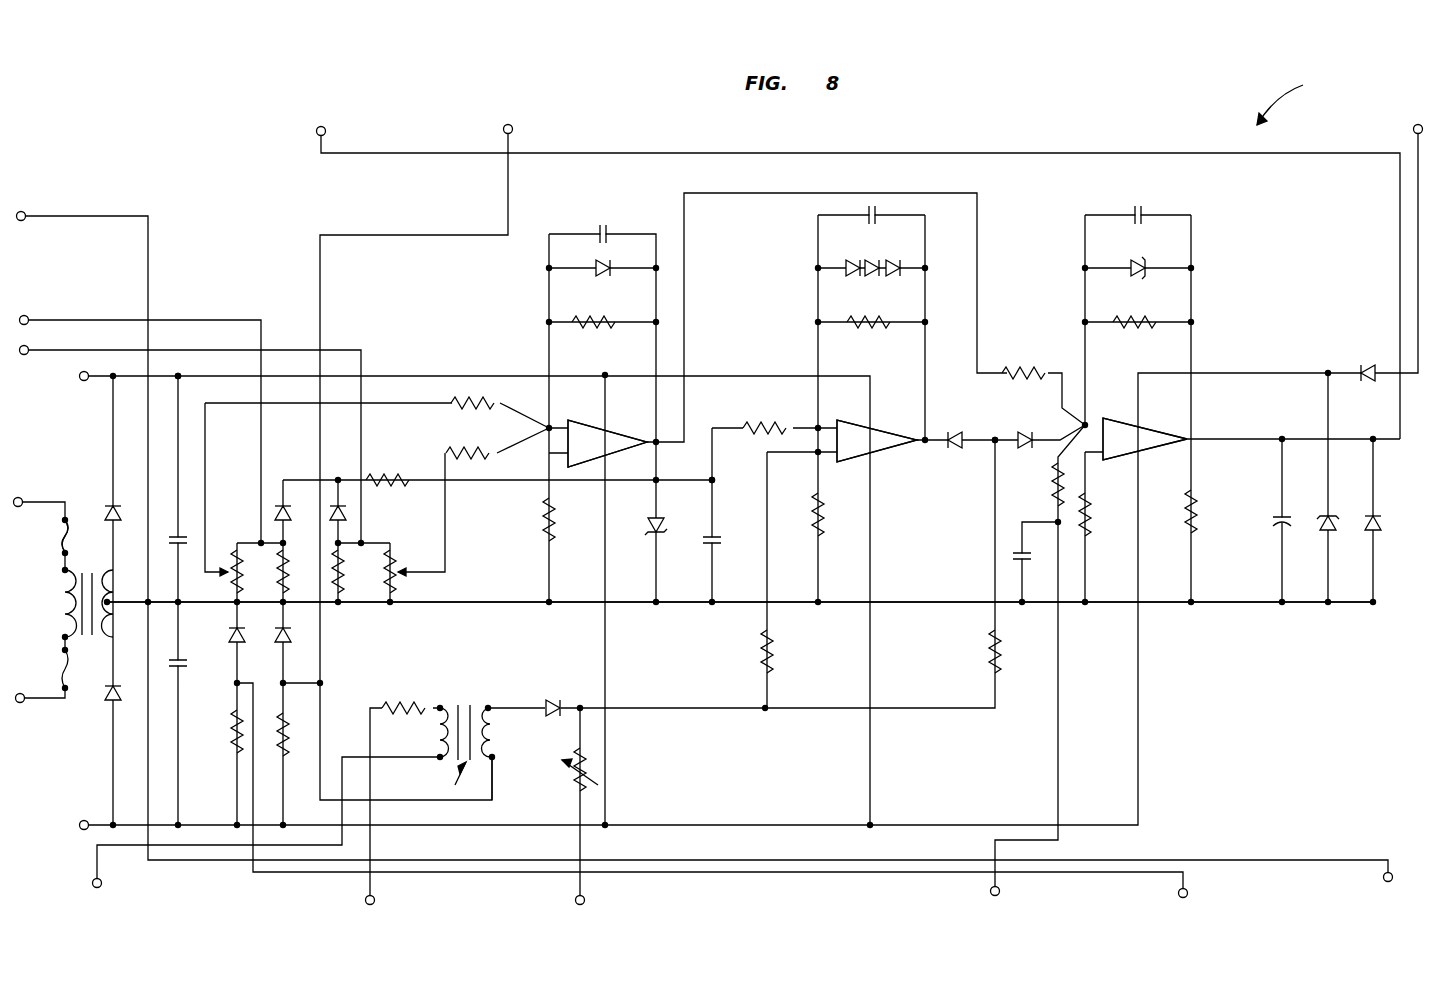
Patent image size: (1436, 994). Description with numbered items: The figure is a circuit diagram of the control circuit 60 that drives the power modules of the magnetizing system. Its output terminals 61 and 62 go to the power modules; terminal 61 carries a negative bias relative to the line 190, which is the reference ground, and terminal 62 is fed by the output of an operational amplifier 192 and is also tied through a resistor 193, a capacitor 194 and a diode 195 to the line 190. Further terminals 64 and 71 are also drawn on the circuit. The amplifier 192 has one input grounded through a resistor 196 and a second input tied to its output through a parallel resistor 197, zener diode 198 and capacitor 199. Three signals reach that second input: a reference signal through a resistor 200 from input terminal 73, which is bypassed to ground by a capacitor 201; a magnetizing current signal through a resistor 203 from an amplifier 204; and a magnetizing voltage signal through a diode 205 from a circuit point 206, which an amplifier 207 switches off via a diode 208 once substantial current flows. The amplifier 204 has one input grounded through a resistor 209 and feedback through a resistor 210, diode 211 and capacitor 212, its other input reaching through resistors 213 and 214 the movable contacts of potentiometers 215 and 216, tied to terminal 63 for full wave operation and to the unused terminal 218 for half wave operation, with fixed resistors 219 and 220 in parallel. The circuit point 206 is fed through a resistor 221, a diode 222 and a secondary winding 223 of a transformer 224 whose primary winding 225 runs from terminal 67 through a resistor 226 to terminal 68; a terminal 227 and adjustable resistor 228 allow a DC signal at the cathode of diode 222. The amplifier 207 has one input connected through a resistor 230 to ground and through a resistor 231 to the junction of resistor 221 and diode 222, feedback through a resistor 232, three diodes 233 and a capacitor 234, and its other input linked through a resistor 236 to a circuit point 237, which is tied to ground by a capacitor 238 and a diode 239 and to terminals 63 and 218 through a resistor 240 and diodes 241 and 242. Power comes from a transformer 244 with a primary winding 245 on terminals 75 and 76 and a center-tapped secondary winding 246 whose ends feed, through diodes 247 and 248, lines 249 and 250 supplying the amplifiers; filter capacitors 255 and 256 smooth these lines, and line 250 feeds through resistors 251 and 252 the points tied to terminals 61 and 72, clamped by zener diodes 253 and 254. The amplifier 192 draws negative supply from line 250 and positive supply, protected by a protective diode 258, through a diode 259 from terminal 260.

The control circuit 60 is at (1294, 97).
The output terminal 61 is at (512, 129).
The output terminal 62 is at (324, 130).
The terminal 63 is at (25, 316).
The terminal 64 is at (22, 212).
The terminal 67 is at (101, 885).
The terminal 68 is at (374, 900).
The terminal 71 is at (1385, 880).
The terminal 72 is at (1187, 893).
The input terminal 73 is at (998, 895).
The terminal 75 is at (20, 498).
The terminal 76 is at (22, 705).
The line 190 is at (500, 604).
The operational amplifier 192 is at (1120, 447).
The resistor 193 is at (1193, 528).
The capacitor 194 is at (1280, 515).
The diode 195 is at (1375, 540).
The resistor 196 is at (1087, 498).
The resistor 197 is at (1125, 326).
The zener diode 198 is at (1136, 262).
The capacitor 199 is at (1140, 212).
The resistor 200 is at (1056, 472).
The capacitor 201 is at (1020, 562).
The resistor 203 is at (1050, 368).
The amplifier 204 is at (612, 428).
The diode 205 is at (1027, 433).
The circuit point 206 is at (995, 442).
The amplifier 207 is at (885, 450).
The diode 208 is at (957, 433).
The resistor 209 is at (547, 528).
The resistor 210 is at (590, 326).
The diode 211 is at (600, 272).
The capacitor 212 is at (603, 230).
The resistor 213 is at (480, 403).
The resistor 214 is at (495, 455).
The potentiometer 215 is at (233, 568).
The potentiometer 216 is at (393, 562).
The terminal 218 is at (24, 354).
The fixed resistor 219 is at (283, 575).
The fixed resistor 220 is at (342, 590).
The resistor 221 is at (990, 655).
The diode 222 is at (553, 702).
The secondary winding 223 is at (492, 735).
The transformer 224 is at (456, 782).
The primary winding 225 is at (438, 735).
The resistor 226 is at (410, 705).
The terminal 227 is at (584, 900).
The adjustable resistor 228 is at (598, 778).
The resistor 230 is at (816, 540).
The resistor 231 is at (769, 650).
The resistor 232 is at (850, 326).
The diodes 233 is at (870, 272).
The capacitor 234 is at (873, 220).
The resistor 236 is at (785, 426).
The circuit point 237 is at (713, 478).
The capacitor 238 is at (711, 553).
The diode 239 is at (654, 535).
The resistor 240 is at (395, 478).
The diode 241 is at (283, 495).
The diode 242 is at (348, 513).
The transformer 244 is at (88, 570).
The primary winding 245 is at (68, 605).
The secondary winding 246 is at (108, 598).
The diode 247 is at (108, 513).
The diode 248 is at (110, 700).
The line 249 is at (180, 377).
The line 250 is at (90, 822).
The resistor 251 is at (285, 770).
The resistor 252 is at (235, 740).
The zener diode 253 is at (280, 650).
The zener diode 254 is at (231, 640).
The filter capacitor 255 is at (182, 548).
The filter capacitor 256 is at (184, 668).
The protective diode 258 is at (1326, 540).
The diode 259 is at (1368, 366).
The terminal 260 is at (1414, 131).